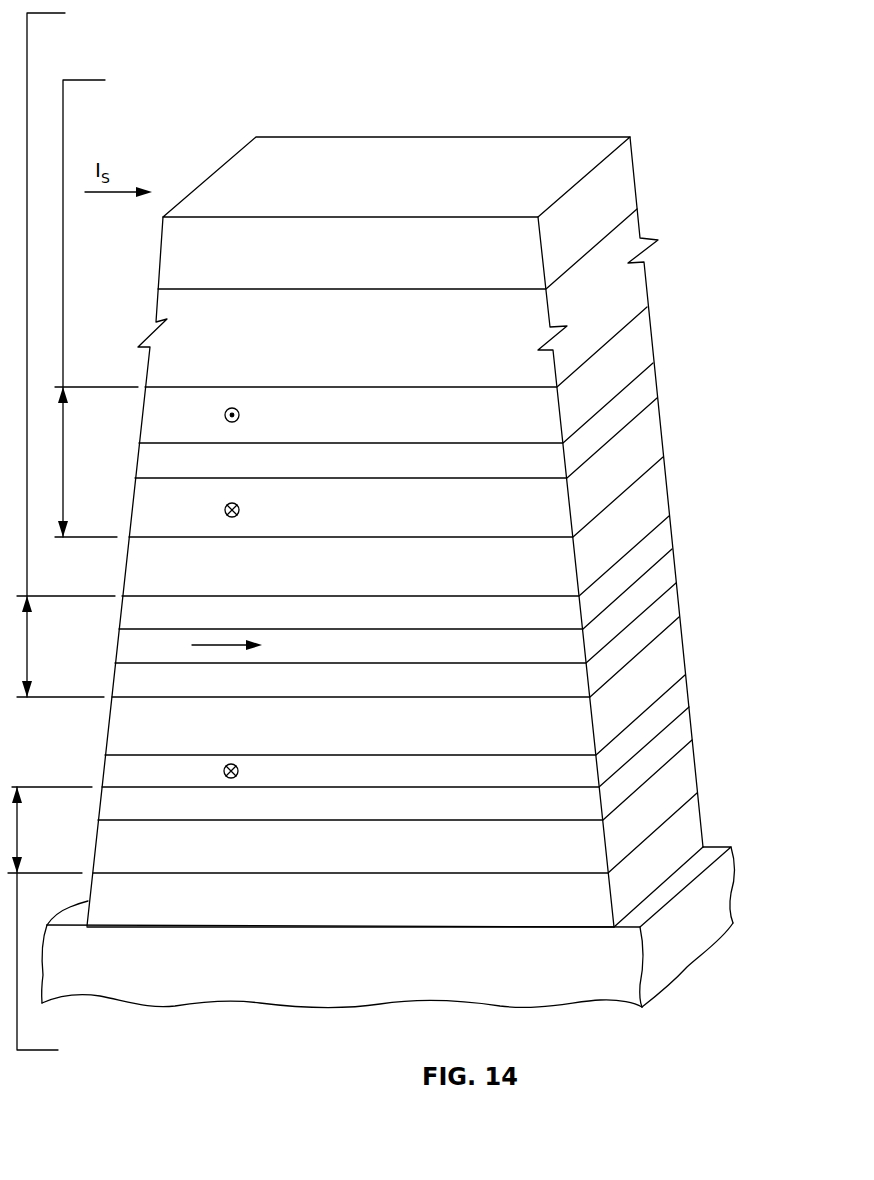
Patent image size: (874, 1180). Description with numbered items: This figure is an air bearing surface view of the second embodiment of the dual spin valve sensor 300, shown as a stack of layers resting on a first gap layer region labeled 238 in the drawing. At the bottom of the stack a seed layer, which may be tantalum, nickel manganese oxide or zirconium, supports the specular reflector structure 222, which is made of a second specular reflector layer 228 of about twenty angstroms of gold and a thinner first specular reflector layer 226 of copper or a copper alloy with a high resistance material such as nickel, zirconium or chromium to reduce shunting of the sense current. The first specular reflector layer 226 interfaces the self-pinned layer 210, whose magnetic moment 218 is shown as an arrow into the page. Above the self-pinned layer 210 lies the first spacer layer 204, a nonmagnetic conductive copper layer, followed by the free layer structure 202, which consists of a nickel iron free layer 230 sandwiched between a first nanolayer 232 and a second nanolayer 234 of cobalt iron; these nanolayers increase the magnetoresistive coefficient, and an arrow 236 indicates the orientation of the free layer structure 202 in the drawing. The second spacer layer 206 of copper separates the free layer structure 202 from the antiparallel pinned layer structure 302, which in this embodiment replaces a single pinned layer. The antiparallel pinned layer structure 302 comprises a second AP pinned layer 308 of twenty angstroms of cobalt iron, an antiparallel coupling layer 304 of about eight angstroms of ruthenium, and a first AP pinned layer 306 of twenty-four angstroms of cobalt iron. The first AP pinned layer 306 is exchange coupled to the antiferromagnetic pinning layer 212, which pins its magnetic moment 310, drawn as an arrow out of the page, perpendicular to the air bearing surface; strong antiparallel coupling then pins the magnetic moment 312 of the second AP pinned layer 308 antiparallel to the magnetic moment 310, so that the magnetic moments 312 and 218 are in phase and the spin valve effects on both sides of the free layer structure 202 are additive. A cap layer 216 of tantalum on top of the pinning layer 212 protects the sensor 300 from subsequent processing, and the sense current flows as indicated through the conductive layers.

The dual spin valve sensor 300 is at (586, 112).
The cap layer 216 is at (627, 172).
The antiferromagnetic pinning layer 212 is at (640, 287).
The first antiparallel pinned layer 306 is at (650, 343).
The antiparallel coupling layer 304 is at (655, 386).
The second antiparallel pinned layer 308 is at (657, 432).
The second spacer layer 206 is at (663, 490).
The second nanolayer 234 is at (668, 538).
The free layer 230 is at (672, 572).
The first nanolayer 232 is at (677, 604).
The first spacer layer 204 is at (683, 652).
The self-pinned layer 210 is at (686, 697).
The first specular reflector layer 226 is at (690, 731).
The second specular reflector layer 228 is at (695, 778).
The first gap layer (G1) substrate 238 is at (680, 963).
The magnetic moment of first antiparallel pinned layer 310 is at (224, 415).
The magnetic moment of second AP pinned layer 312 is at (224, 510).
The magnetic moment of free layer structure 236 is at (216, 645).
The magnetic moment of self-pinned layer 218 is at (223, 771).
The free layer structure 202 is at (126, 349).
The antiparallel pinned layer structure 302 is at (172, 302).
The specular reflector structure 222 is at (142, 937).